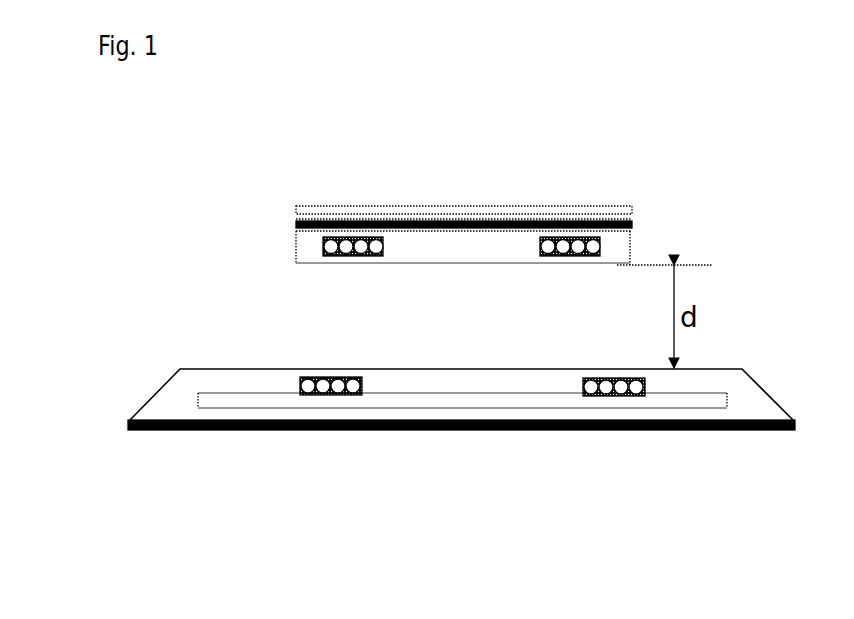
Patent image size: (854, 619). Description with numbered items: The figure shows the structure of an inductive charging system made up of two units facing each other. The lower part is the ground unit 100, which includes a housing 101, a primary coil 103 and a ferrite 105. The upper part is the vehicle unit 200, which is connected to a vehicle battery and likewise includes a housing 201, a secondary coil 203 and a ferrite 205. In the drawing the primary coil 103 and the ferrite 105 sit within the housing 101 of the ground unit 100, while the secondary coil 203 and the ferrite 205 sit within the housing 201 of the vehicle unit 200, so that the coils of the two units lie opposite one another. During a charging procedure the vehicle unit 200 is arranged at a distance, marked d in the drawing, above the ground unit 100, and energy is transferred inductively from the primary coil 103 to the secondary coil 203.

The ground unit 100 is at (410, 452).
The housing 101 is at (133, 418).
The primary coil 103 is at (340, 378).
The ferrite 105 is at (245, 397).
The vehicle unit 200 is at (468, 176).
The housing 201 is at (295, 210).
The secondary coil 203 is at (383, 247).
The ferrite 205 is at (632, 225).